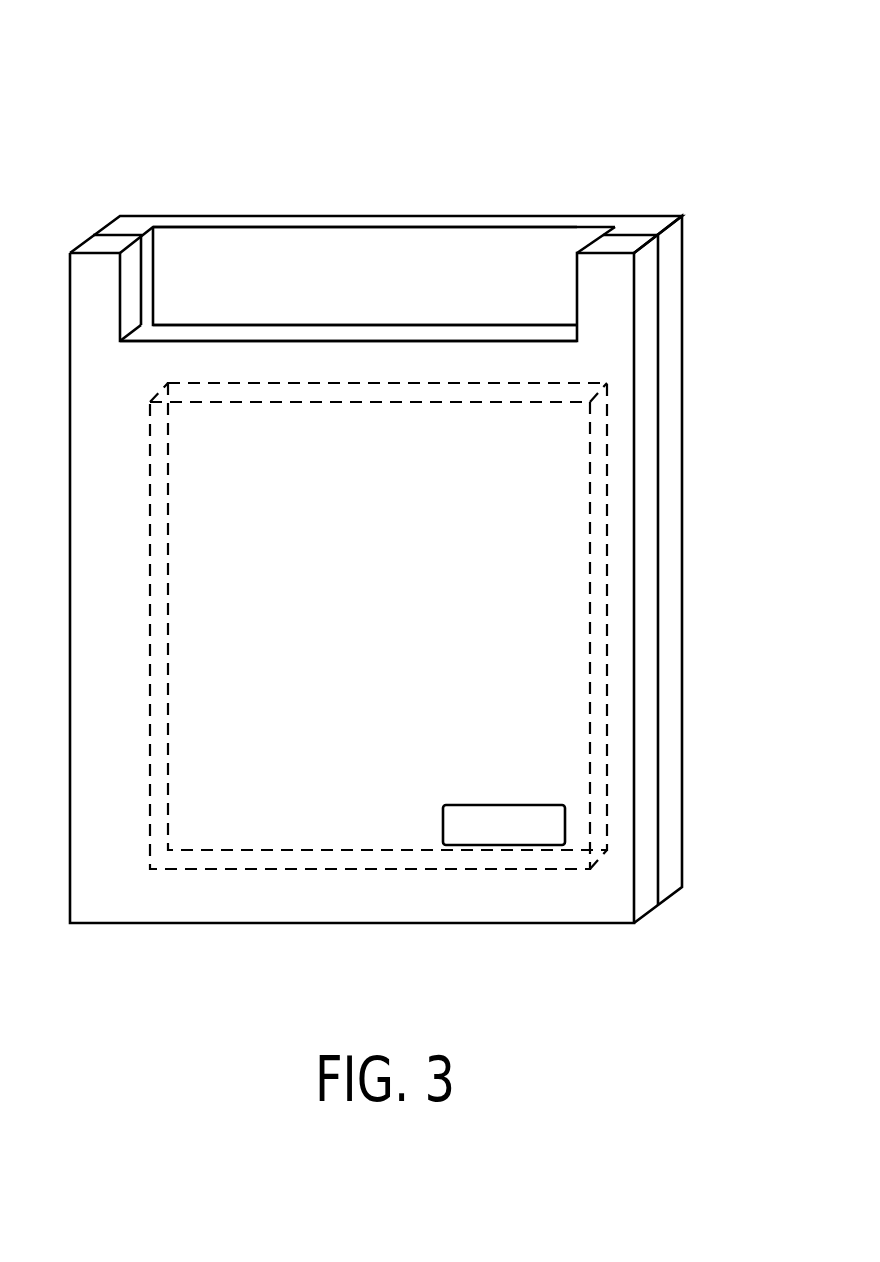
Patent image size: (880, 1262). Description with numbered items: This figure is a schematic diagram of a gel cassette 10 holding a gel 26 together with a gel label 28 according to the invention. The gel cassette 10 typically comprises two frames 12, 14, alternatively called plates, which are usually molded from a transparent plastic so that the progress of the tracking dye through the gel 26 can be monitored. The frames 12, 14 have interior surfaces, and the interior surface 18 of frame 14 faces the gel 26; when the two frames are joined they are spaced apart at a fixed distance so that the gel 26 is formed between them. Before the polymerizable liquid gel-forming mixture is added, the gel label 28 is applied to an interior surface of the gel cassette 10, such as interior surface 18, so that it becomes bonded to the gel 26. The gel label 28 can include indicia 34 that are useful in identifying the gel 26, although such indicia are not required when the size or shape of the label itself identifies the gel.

The gel cassette 10 is at (118, 92).
The frame 12 is at (91, 507).
The frame 14 is at (668, 310).
The interior surface 18 is at (253, 245).
The gel 26 is at (559, 630).
The gel label 28 is at (550, 845).
The indicia 34 is at (470, 845).